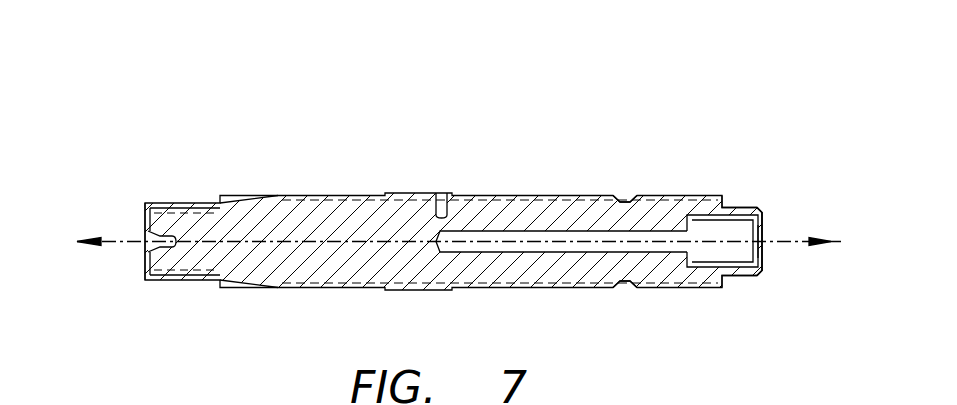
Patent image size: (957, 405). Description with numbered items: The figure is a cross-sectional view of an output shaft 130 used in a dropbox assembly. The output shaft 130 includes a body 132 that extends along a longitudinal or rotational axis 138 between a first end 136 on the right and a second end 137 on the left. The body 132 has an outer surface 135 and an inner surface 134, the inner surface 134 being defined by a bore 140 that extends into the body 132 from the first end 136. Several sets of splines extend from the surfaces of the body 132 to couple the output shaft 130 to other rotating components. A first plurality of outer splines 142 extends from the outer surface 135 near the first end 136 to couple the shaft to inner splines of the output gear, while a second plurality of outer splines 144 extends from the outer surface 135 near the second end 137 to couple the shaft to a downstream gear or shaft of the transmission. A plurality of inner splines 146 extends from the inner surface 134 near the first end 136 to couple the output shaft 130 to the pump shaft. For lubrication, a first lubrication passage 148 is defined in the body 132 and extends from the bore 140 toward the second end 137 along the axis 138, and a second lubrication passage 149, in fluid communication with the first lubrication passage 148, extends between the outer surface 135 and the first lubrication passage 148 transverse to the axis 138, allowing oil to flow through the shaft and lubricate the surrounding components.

The output shaft 130 is at (452, 202).
The body 132 is at (325, 189).
The inner surface 134 is at (763, 228).
The outer surface 135 is at (285, 195).
The first end 136 is at (767, 206).
The second end 137 is at (136, 208).
The longitudinal or rotational axis 138 is at (133, 247).
The bore 140 is at (757, 247).
The first plurality of outer splines 142 is at (673, 195).
The second plurality of outer splines 144 is at (188, 203).
The inner splines 146 is at (723, 256).
The first lubrication passage 148 is at (549, 230).
The second lubrication passage 149 is at (439, 188).